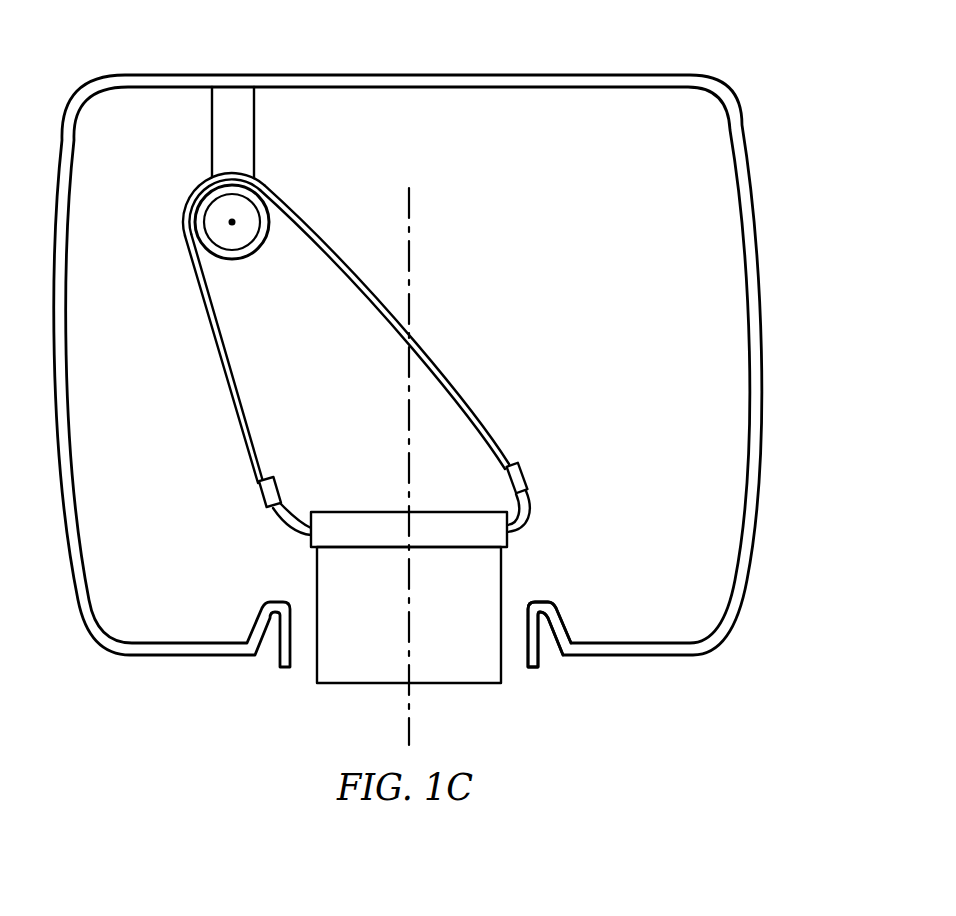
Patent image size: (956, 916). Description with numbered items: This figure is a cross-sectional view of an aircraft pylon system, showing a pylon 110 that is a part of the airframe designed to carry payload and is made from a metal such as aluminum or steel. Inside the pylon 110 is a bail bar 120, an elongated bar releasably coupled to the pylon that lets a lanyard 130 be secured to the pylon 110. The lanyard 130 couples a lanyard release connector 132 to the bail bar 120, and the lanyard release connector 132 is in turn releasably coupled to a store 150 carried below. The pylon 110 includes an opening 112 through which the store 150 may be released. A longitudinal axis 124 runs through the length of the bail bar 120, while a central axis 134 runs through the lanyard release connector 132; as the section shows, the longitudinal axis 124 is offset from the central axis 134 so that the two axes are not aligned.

The pylon 110 is at (463, 75).
The opening 112 is at (518, 676).
The bail bar 120 is at (233, 259).
The longitudinal axis 124 is at (234, 224).
The lanyard 130 is at (446, 380).
The lanyard release connector 132 is at (375, 512).
The central axis 134 is at (410, 250).
The store 150 is at (501, 583).